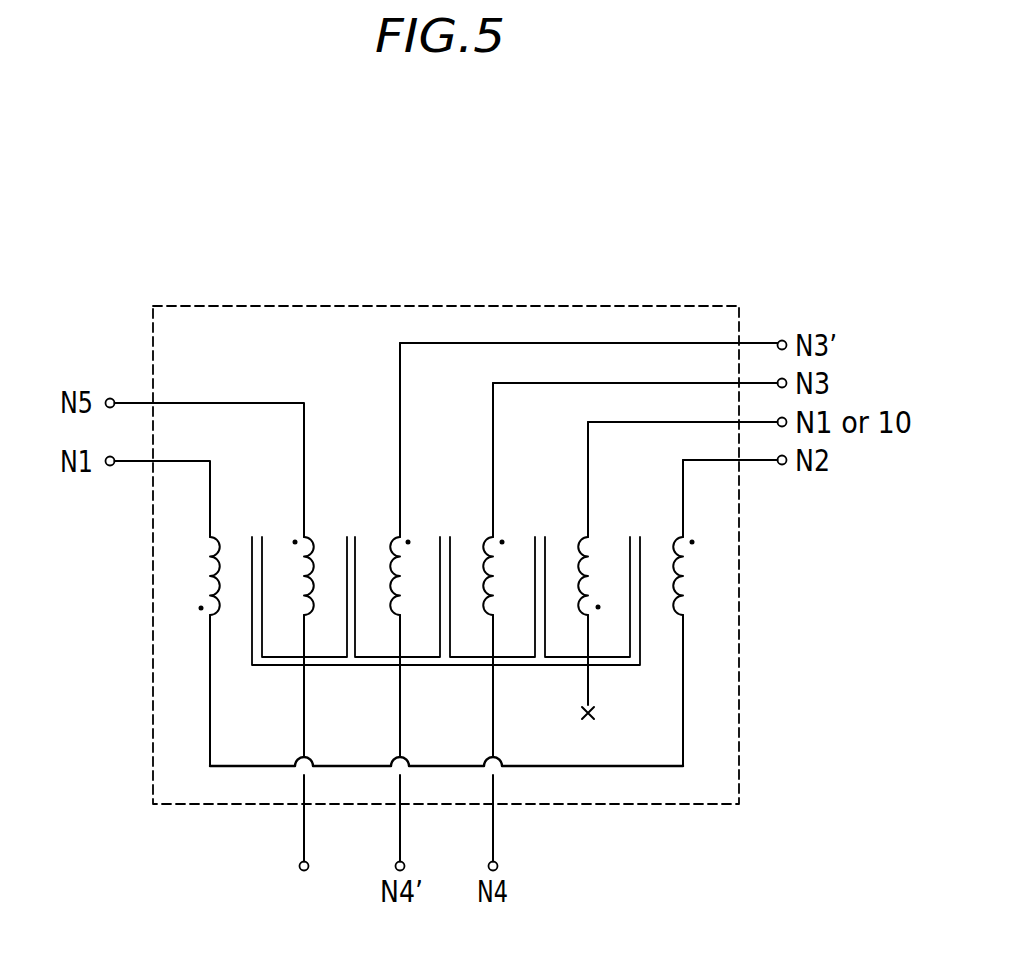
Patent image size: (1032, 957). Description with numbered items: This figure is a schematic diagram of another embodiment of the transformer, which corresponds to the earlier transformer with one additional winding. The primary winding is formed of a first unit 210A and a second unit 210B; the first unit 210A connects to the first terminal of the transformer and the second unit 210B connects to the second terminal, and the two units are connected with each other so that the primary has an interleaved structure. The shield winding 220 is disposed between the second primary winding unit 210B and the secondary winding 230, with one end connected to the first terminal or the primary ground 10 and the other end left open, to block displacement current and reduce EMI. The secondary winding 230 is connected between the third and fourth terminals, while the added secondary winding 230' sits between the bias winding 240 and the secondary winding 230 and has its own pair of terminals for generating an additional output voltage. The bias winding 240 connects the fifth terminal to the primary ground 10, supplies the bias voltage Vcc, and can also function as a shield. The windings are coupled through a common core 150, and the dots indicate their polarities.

The core 150 is at (273, 662).
The first unit of the primary winding 210A is at (212, 537).
The second unit of the primary winding 210B is at (678, 537).
The shield winding 220 is at (583, 537).
The secondary winding 230 is at (607, 622).
The secondary winding 230' is at (556, 602).
The bias winding 240 is at (307, 537).
The primary ground 10 is at (305, 762).